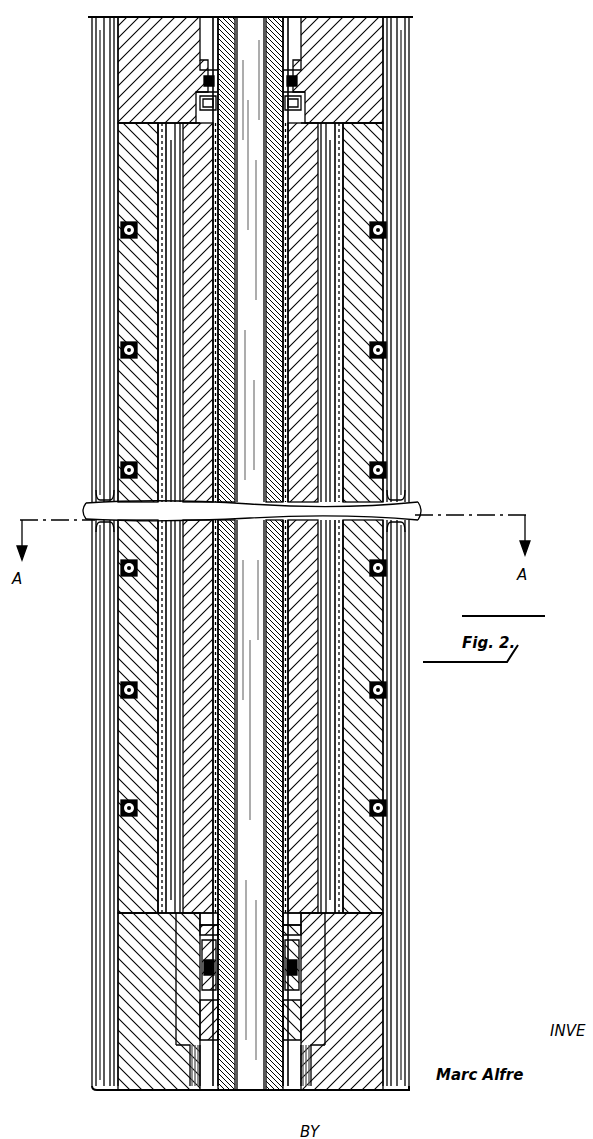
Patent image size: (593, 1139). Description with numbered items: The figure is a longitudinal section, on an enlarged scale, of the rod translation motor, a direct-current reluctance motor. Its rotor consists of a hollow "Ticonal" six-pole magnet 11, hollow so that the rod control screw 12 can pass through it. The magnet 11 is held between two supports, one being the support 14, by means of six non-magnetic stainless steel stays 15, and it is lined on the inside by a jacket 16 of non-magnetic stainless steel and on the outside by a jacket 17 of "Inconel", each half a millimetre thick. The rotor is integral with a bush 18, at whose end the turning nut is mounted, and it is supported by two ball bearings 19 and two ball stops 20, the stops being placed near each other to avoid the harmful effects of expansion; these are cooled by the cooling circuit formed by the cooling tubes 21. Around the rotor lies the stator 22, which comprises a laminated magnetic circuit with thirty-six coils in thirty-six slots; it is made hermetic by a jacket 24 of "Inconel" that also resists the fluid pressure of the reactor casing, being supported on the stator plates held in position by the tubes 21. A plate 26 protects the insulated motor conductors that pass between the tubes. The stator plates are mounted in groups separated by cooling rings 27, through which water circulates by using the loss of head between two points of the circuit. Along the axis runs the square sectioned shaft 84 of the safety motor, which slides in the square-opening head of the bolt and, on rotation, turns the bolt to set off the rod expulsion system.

The 6-pole magnet 11 is at (195, 276).
The rod control screw 12 is at (216, 44).
The support 14 is at (212, 925).
The non-magnetic stainless steel stay 15 is at (176, 420).
The inner jacket 16 is at (292, 194).
The outer jacket 17 is at (212, 336).
The bush 18 is at (218, 1086).
The ball bearing 19 is at (318, 82).
The ball stop 20 is at (332, 986).
The cooling tube 21 is at (400, 272).
The stator 22 is at (138, 288).
The stator jacket 24 is at (165, 418).
The protective plate 26 is at (102, 488).
The cooling ring 27 is at (118, 226).
The square sectioned shaft 84 is at (262, 219).